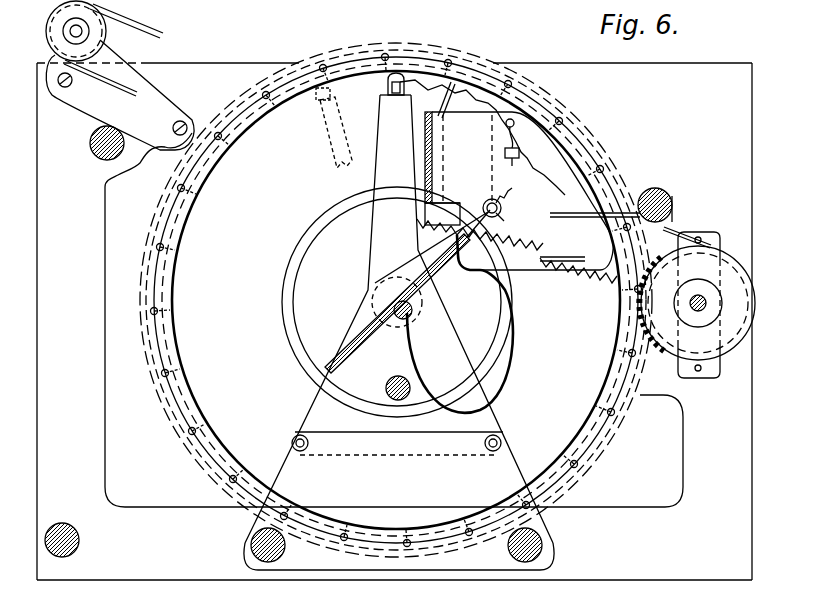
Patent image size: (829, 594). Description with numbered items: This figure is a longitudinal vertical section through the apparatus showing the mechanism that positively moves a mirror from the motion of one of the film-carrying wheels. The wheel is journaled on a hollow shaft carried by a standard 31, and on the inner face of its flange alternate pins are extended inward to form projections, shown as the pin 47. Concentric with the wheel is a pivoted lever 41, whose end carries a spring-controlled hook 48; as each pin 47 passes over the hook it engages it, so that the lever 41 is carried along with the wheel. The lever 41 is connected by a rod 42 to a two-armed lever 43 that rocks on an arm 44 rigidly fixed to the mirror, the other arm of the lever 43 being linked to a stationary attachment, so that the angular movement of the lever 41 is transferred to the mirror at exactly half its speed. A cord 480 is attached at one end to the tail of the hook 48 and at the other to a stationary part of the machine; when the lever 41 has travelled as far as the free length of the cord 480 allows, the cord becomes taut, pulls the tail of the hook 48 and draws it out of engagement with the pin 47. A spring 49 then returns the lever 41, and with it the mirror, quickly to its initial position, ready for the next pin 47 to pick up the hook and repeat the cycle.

The standard 31 is at (398, 355).
The lever 41 is at (385, 252).
The rod 42 is at (452, 170).
The lever 43 is at (549, 215).
The arm 44 is at (503, 202).
The pin 47 is at (512, 104).
The spring-controlled hook 48 is at (381, 73).
The spring 49 is at (437, 270).
The cord 480 is at (440, 78).